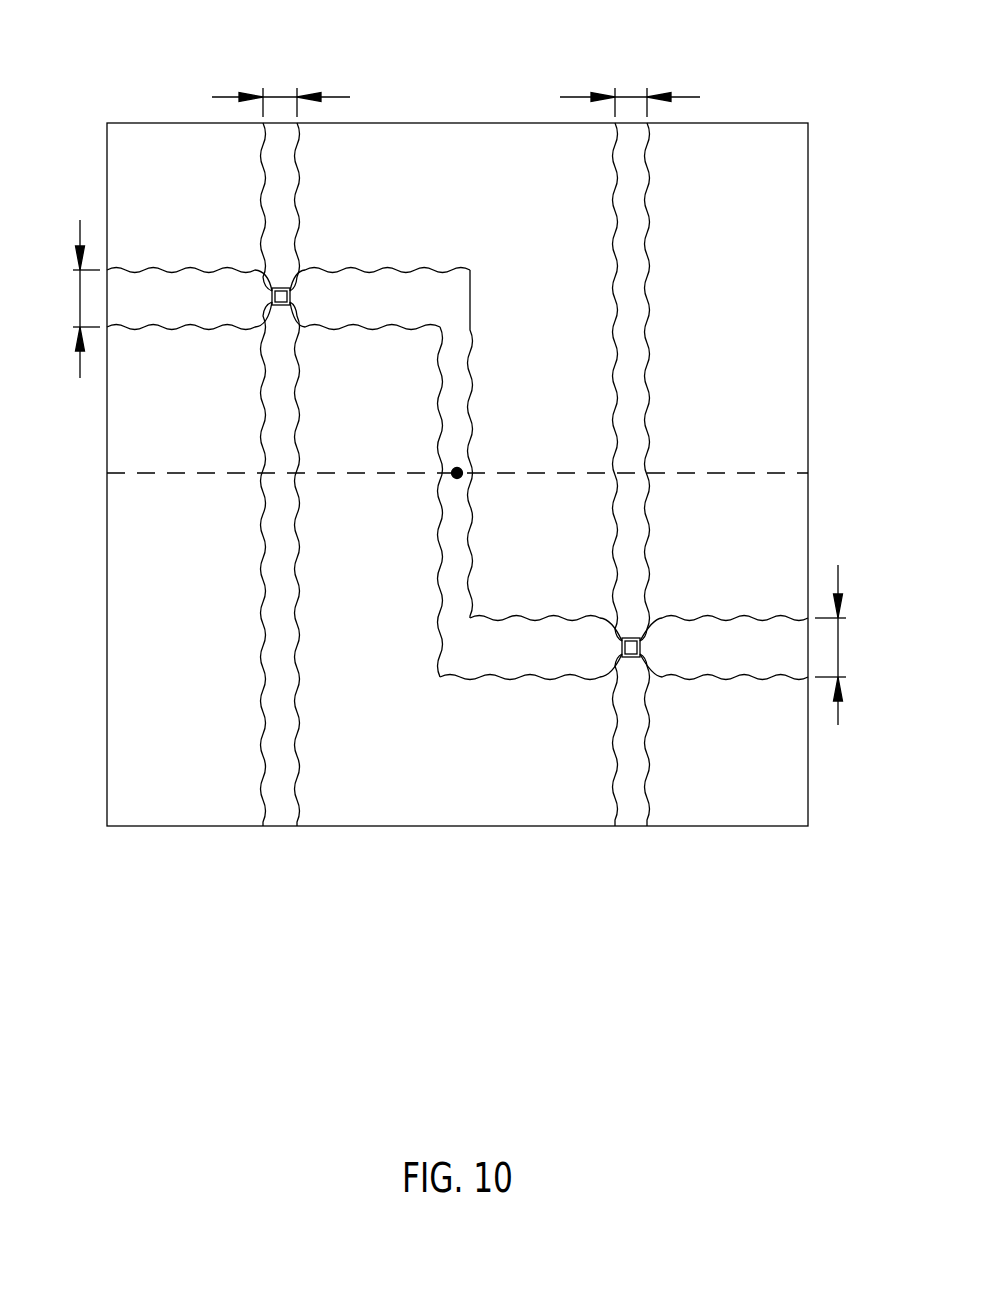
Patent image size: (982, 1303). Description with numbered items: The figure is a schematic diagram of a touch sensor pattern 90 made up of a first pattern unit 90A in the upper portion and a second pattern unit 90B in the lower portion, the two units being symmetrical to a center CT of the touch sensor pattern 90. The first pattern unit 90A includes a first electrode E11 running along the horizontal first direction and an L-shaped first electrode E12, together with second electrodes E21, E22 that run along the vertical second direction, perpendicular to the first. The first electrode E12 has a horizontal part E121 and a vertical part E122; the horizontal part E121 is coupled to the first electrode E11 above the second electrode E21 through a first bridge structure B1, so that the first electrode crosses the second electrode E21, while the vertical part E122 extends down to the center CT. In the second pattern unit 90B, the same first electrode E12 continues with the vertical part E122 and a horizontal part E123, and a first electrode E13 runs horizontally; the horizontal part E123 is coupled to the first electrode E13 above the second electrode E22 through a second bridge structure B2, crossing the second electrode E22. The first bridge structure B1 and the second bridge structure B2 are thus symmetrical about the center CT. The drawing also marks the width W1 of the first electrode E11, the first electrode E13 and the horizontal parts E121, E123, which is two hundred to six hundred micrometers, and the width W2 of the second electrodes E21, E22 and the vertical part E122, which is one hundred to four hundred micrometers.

The touch sensor pattern 90 is at (102, 76).
The first pattern unit 90A is at (786, 170).
The second pattern unit 90B is at (786, 522).
The first electrode E11 is at (147, 285).
The first electrode E12 is at (576, 62).
The horizontal part E121 is at (377, 293).
The vertical part E122 is at (452, 408).
The horizontal part E123 is at (547, 642).
The first electrode E13 is at (760, 658).
The second electrode E21 is at (277, 158).
The second electrode E22 is at (632, 173).
The first bridge structure B1 is at (281, 300).
The second bridge structure B2 is at (631, 652).
The center CT is at (457, 473).
The width W1 is at (460, 472).
The width W2 is at (456, 87).